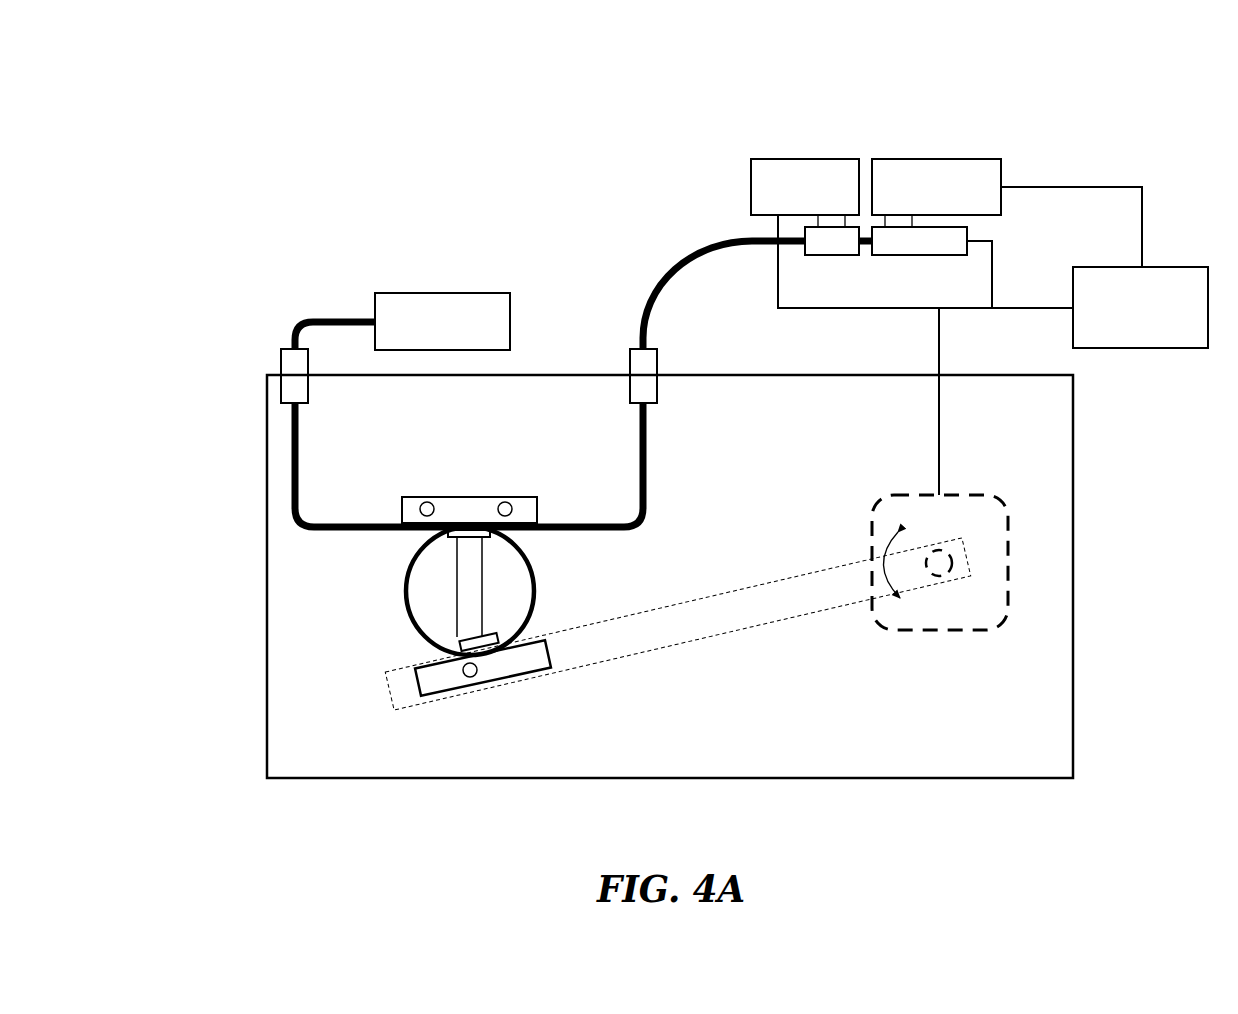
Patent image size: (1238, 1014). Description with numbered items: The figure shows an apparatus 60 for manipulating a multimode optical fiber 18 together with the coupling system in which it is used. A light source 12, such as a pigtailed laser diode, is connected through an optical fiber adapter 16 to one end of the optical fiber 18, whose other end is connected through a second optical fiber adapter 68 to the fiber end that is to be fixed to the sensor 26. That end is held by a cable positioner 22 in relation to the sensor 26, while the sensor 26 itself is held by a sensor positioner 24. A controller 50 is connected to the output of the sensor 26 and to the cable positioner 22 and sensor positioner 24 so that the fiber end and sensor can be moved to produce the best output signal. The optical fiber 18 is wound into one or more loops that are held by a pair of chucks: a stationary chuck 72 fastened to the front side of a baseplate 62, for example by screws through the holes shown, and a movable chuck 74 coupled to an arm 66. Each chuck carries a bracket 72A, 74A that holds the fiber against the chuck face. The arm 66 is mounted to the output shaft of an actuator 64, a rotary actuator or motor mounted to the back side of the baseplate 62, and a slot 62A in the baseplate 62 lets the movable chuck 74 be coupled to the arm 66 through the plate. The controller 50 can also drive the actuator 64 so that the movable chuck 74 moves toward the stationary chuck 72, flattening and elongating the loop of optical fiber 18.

The apparatus 60 is at (455, 118).
The light source 12 is at (442, 293).
The optical fiber adapter 16 is at (280, 349).
The multimode optical fiber 18 is at (603, 527).
The optical fiber adapter 68 is at (630, 349).
The cable positioner 22 is at (807, 160).
The sensor positioner 24 is at (973, 160).
The sensor 26 is at (920, 255).
The controller 50 is at (1140, 307).
The baseplate 62 is at (670, 576).
The slot 62A is at (457, 592).
The actuator 64 is at (968, 495).
The arm 66 is at (765, 603).
The stationary chuck 72 is at (470, 503).
The bracket 72A is at (482, 537).
The movable chuck 74 is at (442, 693).
The bracket 74A is at (457, 640).